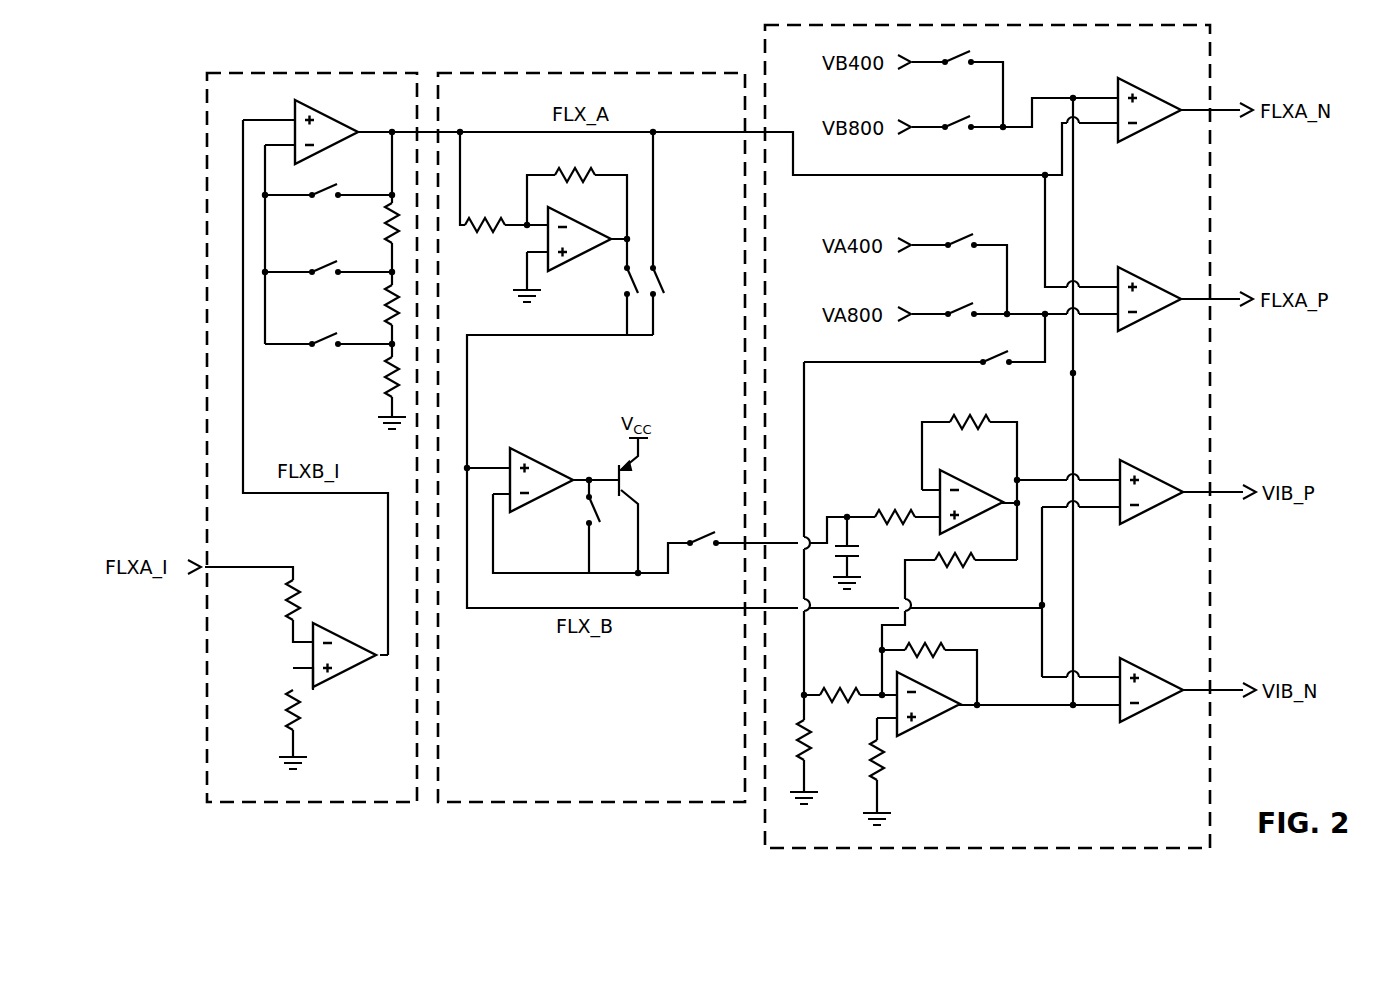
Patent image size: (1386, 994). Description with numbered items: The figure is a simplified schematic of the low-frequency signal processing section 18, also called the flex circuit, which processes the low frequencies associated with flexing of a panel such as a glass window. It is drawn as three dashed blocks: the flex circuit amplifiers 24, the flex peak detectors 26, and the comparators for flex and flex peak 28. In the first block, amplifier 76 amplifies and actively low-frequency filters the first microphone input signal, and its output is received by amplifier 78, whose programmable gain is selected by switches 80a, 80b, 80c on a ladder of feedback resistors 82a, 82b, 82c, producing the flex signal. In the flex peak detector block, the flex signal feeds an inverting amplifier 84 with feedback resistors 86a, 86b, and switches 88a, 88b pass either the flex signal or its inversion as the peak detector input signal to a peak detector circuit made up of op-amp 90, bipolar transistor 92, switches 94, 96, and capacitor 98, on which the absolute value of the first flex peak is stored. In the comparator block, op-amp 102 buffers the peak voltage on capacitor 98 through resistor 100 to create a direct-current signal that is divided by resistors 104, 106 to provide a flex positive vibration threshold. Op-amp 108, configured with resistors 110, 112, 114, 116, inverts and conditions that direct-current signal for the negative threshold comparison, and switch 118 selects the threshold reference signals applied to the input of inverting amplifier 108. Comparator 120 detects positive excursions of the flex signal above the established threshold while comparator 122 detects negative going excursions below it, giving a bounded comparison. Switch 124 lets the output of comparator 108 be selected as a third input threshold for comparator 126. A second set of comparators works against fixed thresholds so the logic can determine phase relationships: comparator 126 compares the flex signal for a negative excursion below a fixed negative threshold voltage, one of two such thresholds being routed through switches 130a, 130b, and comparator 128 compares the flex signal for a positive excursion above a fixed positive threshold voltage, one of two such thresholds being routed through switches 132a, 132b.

The low-frequency signal processing section 18 is at (203, 58).
The flex circuit amplifiers 24 is at (338, 73).
The flex peak detectors 26 is at (547, 73).
The comparators for flex and flex peak 28 is at (761, 60).
The amplifier 76 is at (342, 636).
The amplifier 78 is at (319, 108).
The switch 80a is at (326, 205).
The switch 80b is at (332, 275).
The switch 80c is at (323, 350).
The feedback resistor 82a is at (388, 233).
The feedback resistor 82b is at (389, 319).
The feedback resistor 82c is at (386, 382).
The inverting amplifier 84 is at (599, 225).
The feedback resistor 86a is at (498, 220).
The feedback resistor 86b is at (575, 170).
The switch 88a is at (622, 280).
The switch 88b is at (660, 281).
The op-amp 90 is at (537, 466).
The bipolar transistor 92 is at (636, 468).
The switch 94 is at (593, 515).
The switch 96 is at (702, 536).
The capacitor 98 is at (858, 552).
The resistor 100 is at (888, 511).
The op-amp 102 is at (967, 490).
The dividing resistor 104 is at (969, 417).
The dividing resistor 106 is at (955, 565).
The op-amp 108 is at (916, 723).
The resistor 110 is at (925, 648).
The resistor 112 is at (838, 692).
The resistor 114 is at (814, 753).
The resistor 116 is at (882, 767).
The switch 118 is at (1000, 360).
The comparator 120 is at (1145, 474).
The comparator 122 is at (1145, 671).
The switch 124 is at (1078, 383).
The comparator 126 is at (1139, 94).
The comparator 128 is at (1145, 283).
The switch 130a is at (955, 73).
The switch 130b is at (955, 138).
The switch 132a is at (966, 239).
The switch 132b is at (960, 308).